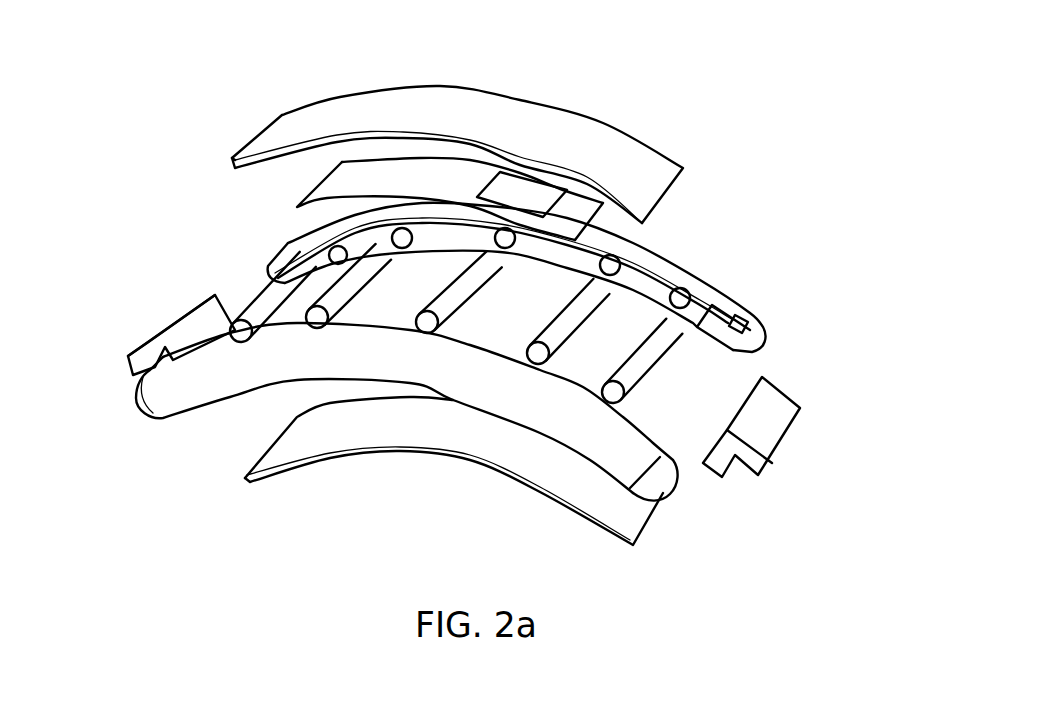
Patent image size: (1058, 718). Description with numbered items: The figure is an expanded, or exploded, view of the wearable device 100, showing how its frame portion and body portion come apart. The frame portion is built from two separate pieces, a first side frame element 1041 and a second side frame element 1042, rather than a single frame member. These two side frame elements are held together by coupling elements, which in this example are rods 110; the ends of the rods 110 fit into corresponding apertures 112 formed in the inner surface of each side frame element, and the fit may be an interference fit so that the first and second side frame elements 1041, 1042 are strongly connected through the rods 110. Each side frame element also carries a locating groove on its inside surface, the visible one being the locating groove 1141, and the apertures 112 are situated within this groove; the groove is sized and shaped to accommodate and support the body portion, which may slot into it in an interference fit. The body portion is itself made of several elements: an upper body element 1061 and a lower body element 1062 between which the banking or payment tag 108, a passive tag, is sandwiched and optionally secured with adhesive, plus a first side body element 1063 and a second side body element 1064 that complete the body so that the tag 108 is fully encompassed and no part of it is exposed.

The wearable device 100 is at (622, 85).
The upper body element 1061 is at (413, 88).
The lower body element 1062 is at (330, 463).
The first side body element 1063 is at (150, 337).
The second side body element 1064 is at (790, 437).
The banking or payment tag 108 is at (297, 207).
The rods 110 is at (640, 380).
The apertures 112 is at (713, 278).
The locating groove 1141 is at (645, 282).
The first side frame element 1041 is at (767, 318).
The second side frame element 1042 is at (663, 482).